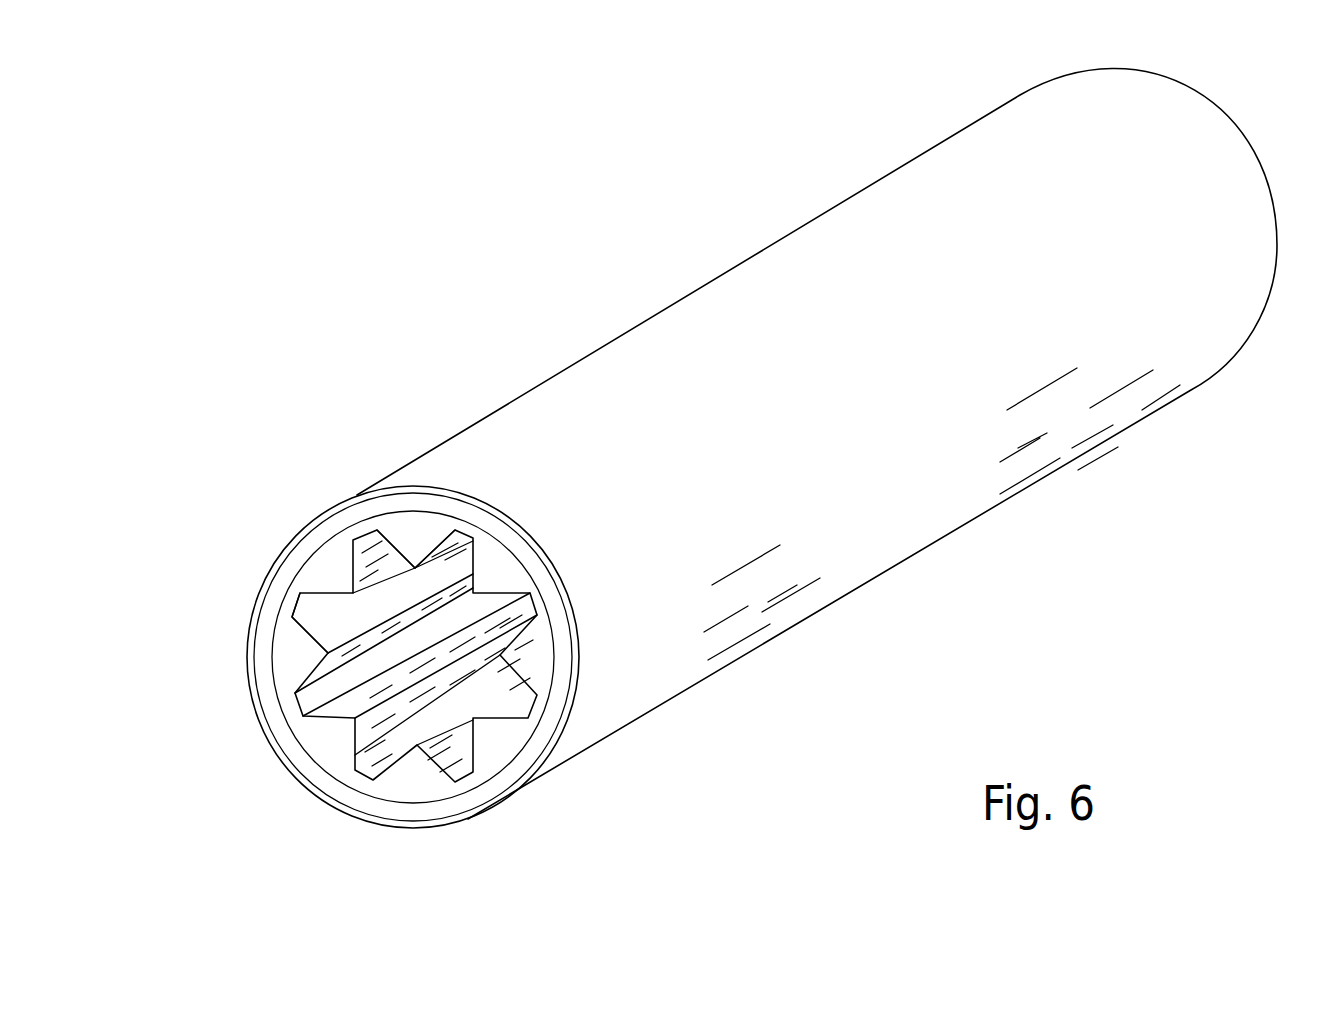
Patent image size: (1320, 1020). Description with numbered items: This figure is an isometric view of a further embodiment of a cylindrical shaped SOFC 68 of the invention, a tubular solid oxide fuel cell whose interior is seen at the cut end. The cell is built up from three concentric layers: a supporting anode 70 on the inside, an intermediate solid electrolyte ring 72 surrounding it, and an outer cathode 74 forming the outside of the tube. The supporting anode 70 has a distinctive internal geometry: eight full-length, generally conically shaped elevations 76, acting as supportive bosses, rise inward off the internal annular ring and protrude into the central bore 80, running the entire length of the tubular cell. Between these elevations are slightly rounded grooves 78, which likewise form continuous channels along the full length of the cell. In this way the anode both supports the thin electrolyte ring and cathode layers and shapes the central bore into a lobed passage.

The cylindrical shaped SOFC 68 is at (547, 267).
The supporting anode 70 is at (415, 537).
The intermediate solid electrolyte ring 72 is at (553, 715).
The outer cathode 74 is at (922, 213).
The conically shaped elevations 76 is at (332, 737).
The grooves 78 is at (318, 692).
The central bore 80 is at (405, 640).